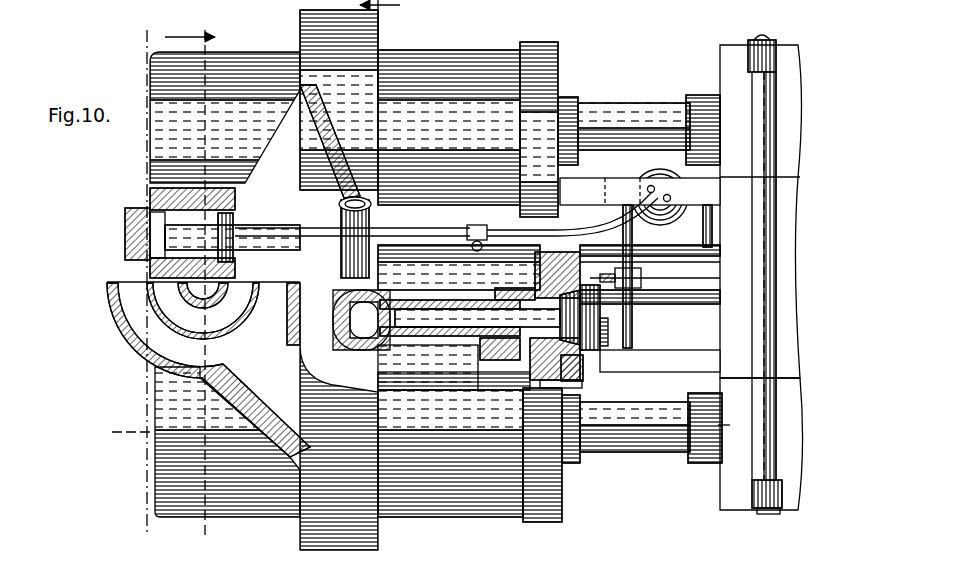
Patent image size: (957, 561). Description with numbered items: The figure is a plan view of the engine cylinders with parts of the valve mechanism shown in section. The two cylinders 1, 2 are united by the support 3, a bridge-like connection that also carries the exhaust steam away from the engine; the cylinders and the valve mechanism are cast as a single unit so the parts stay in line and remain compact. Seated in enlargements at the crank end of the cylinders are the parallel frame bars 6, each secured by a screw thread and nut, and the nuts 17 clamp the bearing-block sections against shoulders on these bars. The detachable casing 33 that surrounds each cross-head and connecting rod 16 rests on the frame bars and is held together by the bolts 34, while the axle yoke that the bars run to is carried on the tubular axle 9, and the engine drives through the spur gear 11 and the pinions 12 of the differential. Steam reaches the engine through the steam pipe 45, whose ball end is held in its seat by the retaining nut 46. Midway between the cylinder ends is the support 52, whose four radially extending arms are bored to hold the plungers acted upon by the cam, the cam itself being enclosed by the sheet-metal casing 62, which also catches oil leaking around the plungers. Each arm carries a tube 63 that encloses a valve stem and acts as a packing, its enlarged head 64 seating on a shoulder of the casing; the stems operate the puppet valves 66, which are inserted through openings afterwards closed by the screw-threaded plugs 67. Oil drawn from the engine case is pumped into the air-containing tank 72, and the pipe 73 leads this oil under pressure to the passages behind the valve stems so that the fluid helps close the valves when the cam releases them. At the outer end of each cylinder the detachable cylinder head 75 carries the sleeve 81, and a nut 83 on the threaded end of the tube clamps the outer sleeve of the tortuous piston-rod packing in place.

The cylinder 1 is at (241, 52).
The cylinder 2 is at (271, 506).
The support 3 is at (276, 128).
The frame bars 6 is at (657, 366).
The tubular axle 9 is at (148, 283).
The spur gear 11 is at (455, 400).
The pinions 12 is at (191, 283).
The connecting rod 16 is at (420, 429).
The nuts 17 is at (108, 283).
The detachable casing 33 is at (741, 505).
The bolts 34 is at (761, 257).
The steam pipe 45 is at (182, 288).
The retaining nut 46 is at (177, 303).
The support 52 is at (337, 304).
The sheet-metal casing 62 is at (701, 304).
The tube 63 is at (427, 306).
The enlarged head 64 is at (524, 300).
The puppet valves 66 is at (152, 236).
The screw-threaded plugs 67 is at (588, 324).
The tank 72 is at (638, 180).
The pipe 73 is at (481, 226).
The cylinder head 75 is at (578, 385).
The sleeve 81 is at (657, 455).
The nut 83 is at (706, 464).